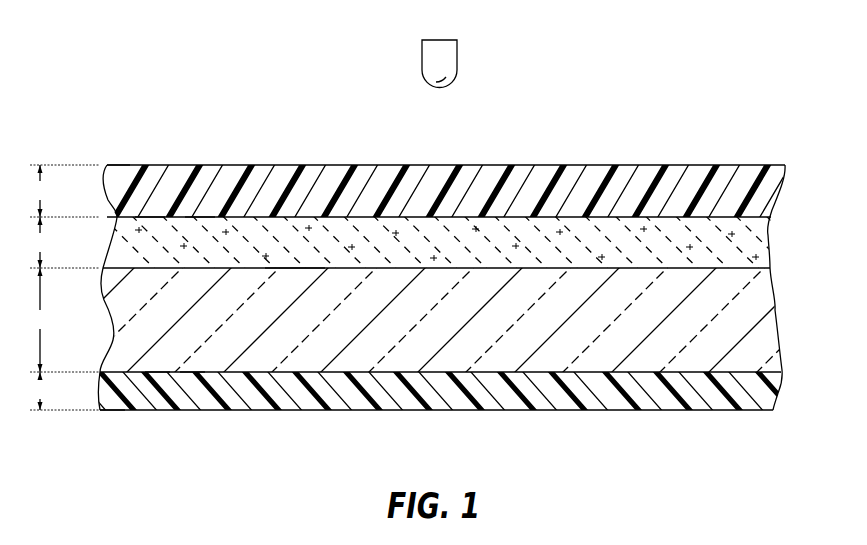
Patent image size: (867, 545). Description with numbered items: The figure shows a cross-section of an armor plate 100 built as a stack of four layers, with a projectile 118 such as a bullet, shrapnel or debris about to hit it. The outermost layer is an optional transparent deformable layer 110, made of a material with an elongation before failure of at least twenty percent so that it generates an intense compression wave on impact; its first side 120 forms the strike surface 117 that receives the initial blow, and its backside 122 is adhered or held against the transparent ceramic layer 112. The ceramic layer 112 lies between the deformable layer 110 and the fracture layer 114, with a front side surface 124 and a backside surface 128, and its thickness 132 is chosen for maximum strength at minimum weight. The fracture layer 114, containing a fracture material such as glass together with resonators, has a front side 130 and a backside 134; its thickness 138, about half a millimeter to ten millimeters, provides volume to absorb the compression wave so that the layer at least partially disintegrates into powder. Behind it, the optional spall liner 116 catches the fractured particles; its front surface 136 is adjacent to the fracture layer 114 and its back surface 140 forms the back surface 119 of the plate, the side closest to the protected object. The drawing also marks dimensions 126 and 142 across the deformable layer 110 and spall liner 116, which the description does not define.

The armor plate 100 is at (620, 82).
The deformable layer 110 is at (782, 188).
The ceramic layer 112 is at (768, 244).
The fracture layer 114 is at (778, 322).
The spall liner 116 is at (777, 394).
The strike surface 117 is at (677, 157).
The projectile 118 is at (457, 58).
The back surface 119 is at (677, 418).
The first side 120 is at (107, 163).
The backside 122 is at (200, 225).
The front side surface 124 is at (147, 217).
The thickness of first outer layer 126 is at (40, 191).
The backside surface 128 is at (286, 276).
The front side 130 is at (310, 265).
The thickness 132 is at (40, 242).
The backside 134 is at (157, 373).
The front surface 136 is at (201, 361).
The thickness 138 is at (40, 320).
The back surface 140 is at (110, 412).
The thickness of second outer layer 142 is at (40, 391).